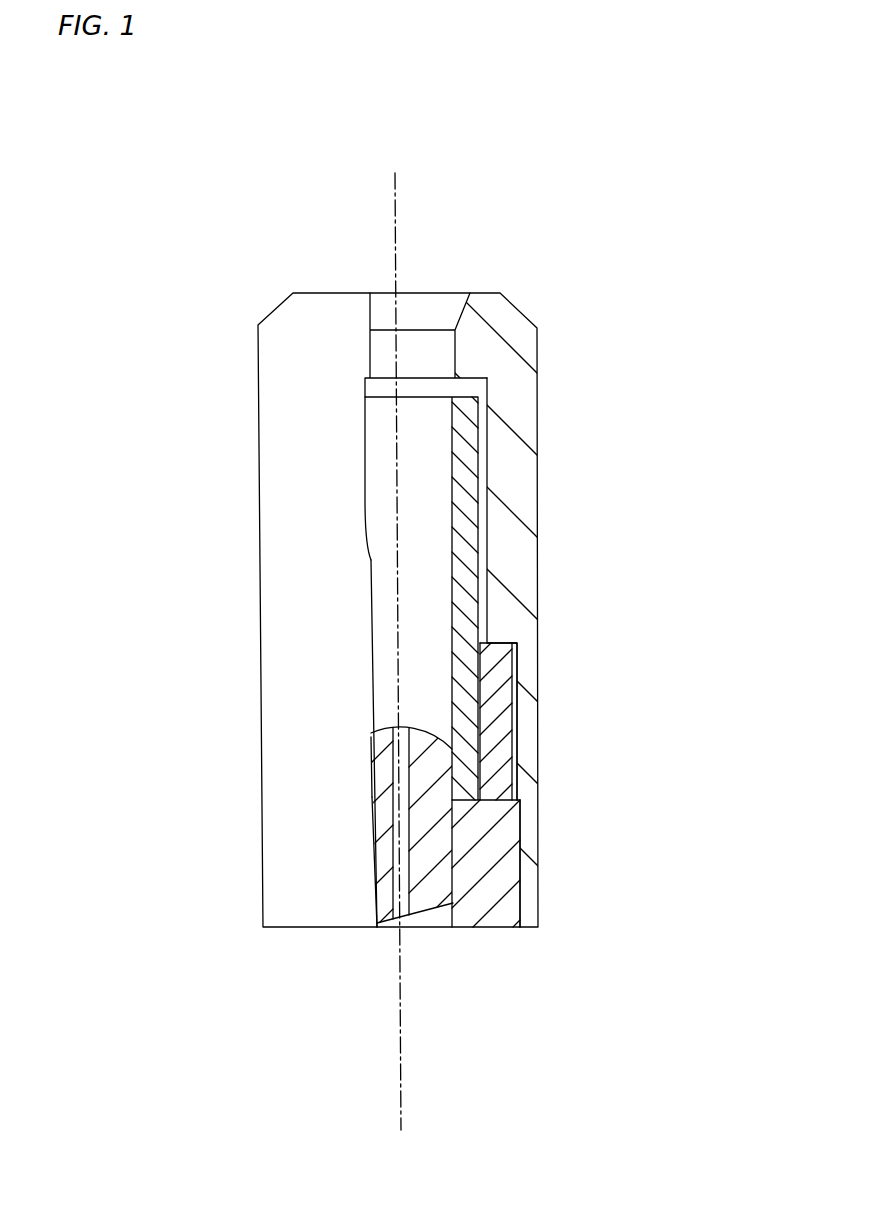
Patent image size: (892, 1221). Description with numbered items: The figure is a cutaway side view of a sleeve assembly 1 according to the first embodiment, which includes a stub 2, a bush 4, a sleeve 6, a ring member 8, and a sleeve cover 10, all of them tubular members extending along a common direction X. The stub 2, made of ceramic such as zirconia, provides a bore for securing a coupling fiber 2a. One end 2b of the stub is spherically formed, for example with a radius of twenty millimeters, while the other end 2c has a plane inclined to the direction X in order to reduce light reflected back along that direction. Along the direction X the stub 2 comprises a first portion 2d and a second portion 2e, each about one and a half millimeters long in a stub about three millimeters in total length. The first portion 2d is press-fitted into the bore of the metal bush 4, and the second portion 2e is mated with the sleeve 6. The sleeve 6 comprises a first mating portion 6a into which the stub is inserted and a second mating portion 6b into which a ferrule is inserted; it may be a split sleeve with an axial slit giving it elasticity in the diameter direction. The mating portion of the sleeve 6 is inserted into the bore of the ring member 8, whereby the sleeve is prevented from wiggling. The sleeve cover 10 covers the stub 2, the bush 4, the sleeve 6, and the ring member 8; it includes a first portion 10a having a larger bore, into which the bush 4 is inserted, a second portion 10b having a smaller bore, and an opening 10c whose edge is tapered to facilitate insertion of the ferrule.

The sleeve assembly 1 is at (627, 190).
The direction X is at (400, 188).
The stub 2 is at (248, 667).
The coupling fiber 2a is at (400, 727).
The one end of the stub 2b is at (375, 724).
The other end of the stub 2c is at (385, 928).
The first portion 2d is at (341, 797).
The second portion 2e is at (341, 737).
The bush 4 is at (477, 867).
The sleeve 6 is at (661, 538).
The first mating portion 6a is at (522, 702).
The second mating portion 6b is at (467, 521).
The ring member 8 is at (498, 730).
The sleeve cover 10 is at (744, 317).
The first portion 10a is at (527, 790).
The second portion 10b is at (517, 428).
The opening 10c is at (487, 329).